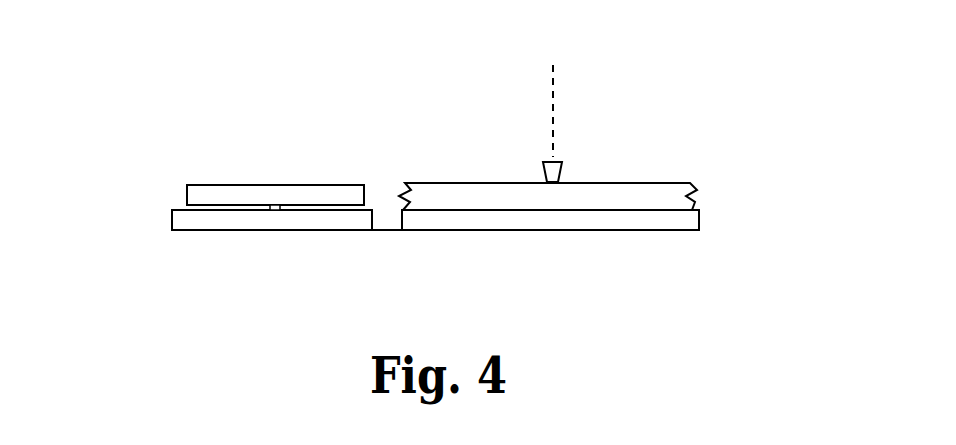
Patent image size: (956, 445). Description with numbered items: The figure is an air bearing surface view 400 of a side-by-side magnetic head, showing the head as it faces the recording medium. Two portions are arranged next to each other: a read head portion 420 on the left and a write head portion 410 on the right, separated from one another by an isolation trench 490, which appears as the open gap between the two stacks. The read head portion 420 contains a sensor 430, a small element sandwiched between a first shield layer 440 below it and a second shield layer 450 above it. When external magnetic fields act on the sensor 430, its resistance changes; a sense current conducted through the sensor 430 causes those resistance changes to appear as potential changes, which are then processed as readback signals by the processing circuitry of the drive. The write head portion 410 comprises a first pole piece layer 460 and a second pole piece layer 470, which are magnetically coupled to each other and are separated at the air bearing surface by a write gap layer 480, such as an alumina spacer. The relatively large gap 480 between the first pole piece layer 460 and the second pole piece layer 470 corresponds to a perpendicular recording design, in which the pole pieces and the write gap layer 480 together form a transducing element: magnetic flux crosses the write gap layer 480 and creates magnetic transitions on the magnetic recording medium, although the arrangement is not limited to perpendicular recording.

The air bearing surface view 400 is at (425, 209).
The write head portion 410 is at (494, 233).
The read head portion 420 is at (290, 236).
The sensor 430 is at (272, 214).
The first shield layer (S1) 440 is at (168, 234).
The second shield layer (S2) 450 is at (177, 180).
The first pole piece layer (P1) 460 is at (703, 239).
The second pole piece layer (P2) 470 is at (565, 167).
The write gap layer 480 is at (705, 191).
The isolation trench 490 is at (388, 206).